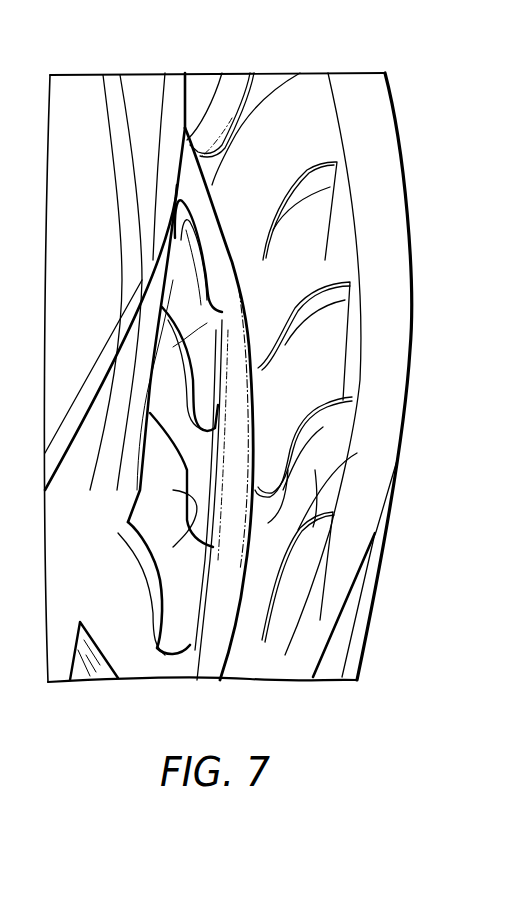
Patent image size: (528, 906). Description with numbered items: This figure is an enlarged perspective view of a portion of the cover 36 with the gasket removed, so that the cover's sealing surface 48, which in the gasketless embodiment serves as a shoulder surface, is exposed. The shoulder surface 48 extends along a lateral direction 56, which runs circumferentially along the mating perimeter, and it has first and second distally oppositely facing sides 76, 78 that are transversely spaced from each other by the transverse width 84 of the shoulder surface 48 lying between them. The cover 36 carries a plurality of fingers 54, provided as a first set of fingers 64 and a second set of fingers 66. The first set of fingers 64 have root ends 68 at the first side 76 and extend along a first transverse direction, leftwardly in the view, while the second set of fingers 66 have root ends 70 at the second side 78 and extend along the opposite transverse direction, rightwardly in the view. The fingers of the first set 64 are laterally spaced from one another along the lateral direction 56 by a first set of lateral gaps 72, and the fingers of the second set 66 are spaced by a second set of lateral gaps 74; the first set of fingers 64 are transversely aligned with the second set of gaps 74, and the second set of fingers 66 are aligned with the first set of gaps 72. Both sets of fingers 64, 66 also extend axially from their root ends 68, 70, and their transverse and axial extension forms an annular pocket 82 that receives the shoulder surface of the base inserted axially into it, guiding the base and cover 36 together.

The cover 36 is at (398, 128).
The sealing surface 48 is at (200, 668).
The fingers 54 is at (173, 280).
The lateral direction 56 is at (452, 300).
The first set of fingers 64 is at (187, 493).
The second set of fingers 66 is at (328, 423).
The root ends 68 is at (173, 490).
The root ends 70 is at (263, 495).
The first set of lateral gaps 72 is at (244, 318).
The second set of lateral gaps 74 is at (249, 431).
The first side 76 is at (190, 645).
The second side 78 is at (238, 657).
The annular pocket 82 is at (206, 110).
The transverse width 84 is at (237, 597).